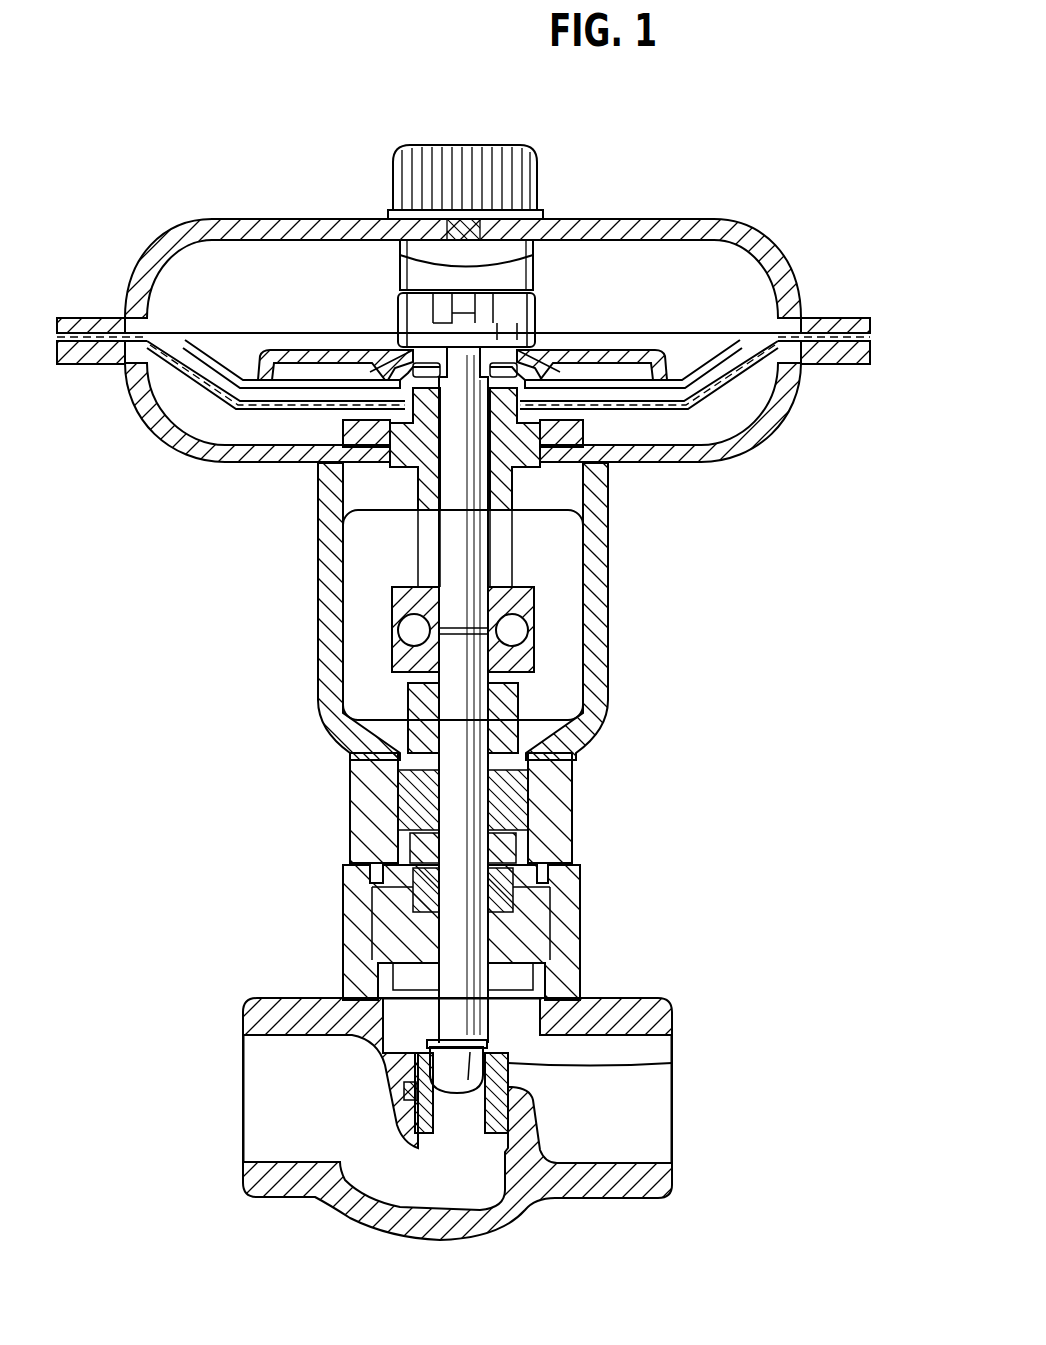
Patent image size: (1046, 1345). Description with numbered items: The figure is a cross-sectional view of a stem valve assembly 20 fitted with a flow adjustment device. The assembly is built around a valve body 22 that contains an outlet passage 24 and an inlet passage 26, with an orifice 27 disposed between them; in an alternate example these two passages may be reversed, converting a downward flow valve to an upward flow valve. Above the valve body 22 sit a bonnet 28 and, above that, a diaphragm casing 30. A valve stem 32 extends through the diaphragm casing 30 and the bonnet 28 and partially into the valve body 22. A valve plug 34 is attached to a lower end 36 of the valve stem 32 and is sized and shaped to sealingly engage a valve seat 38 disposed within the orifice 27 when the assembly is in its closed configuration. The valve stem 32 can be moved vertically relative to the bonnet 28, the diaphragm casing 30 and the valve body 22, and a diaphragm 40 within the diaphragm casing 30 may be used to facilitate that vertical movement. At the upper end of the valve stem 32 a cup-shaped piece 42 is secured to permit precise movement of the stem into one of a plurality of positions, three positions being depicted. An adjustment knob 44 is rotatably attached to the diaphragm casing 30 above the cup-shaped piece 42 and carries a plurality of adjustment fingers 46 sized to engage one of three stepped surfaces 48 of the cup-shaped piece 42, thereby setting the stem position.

The stem valve assembly 20 is at (622, 197).
The valve body 22 is at (628, 1000).
The outlet passage 24 is at (297, 1092).
The inlet passage 26 is at (647, 1127).
The orifice 27 is at (407, 1092).
The bonnet 28 is at (608, 620).
The diaphragm casing 30 is at (746, 440).
The valve stem 32 is at (439, 548).
The valve plug 34 is at (433, 1047).
The lower end 36 is at (430, 1008).
The valve seat 38 is at (670, 1067).
The diaphragm 40 is at (668, 405).
The cup-shaped piece 42 is at (540, 315).
The adjustment knob 44 is at (545, 158).
The adjustment fingers 46 is at (458, 318).
The stepped surfaces 48 is at (403, 310).